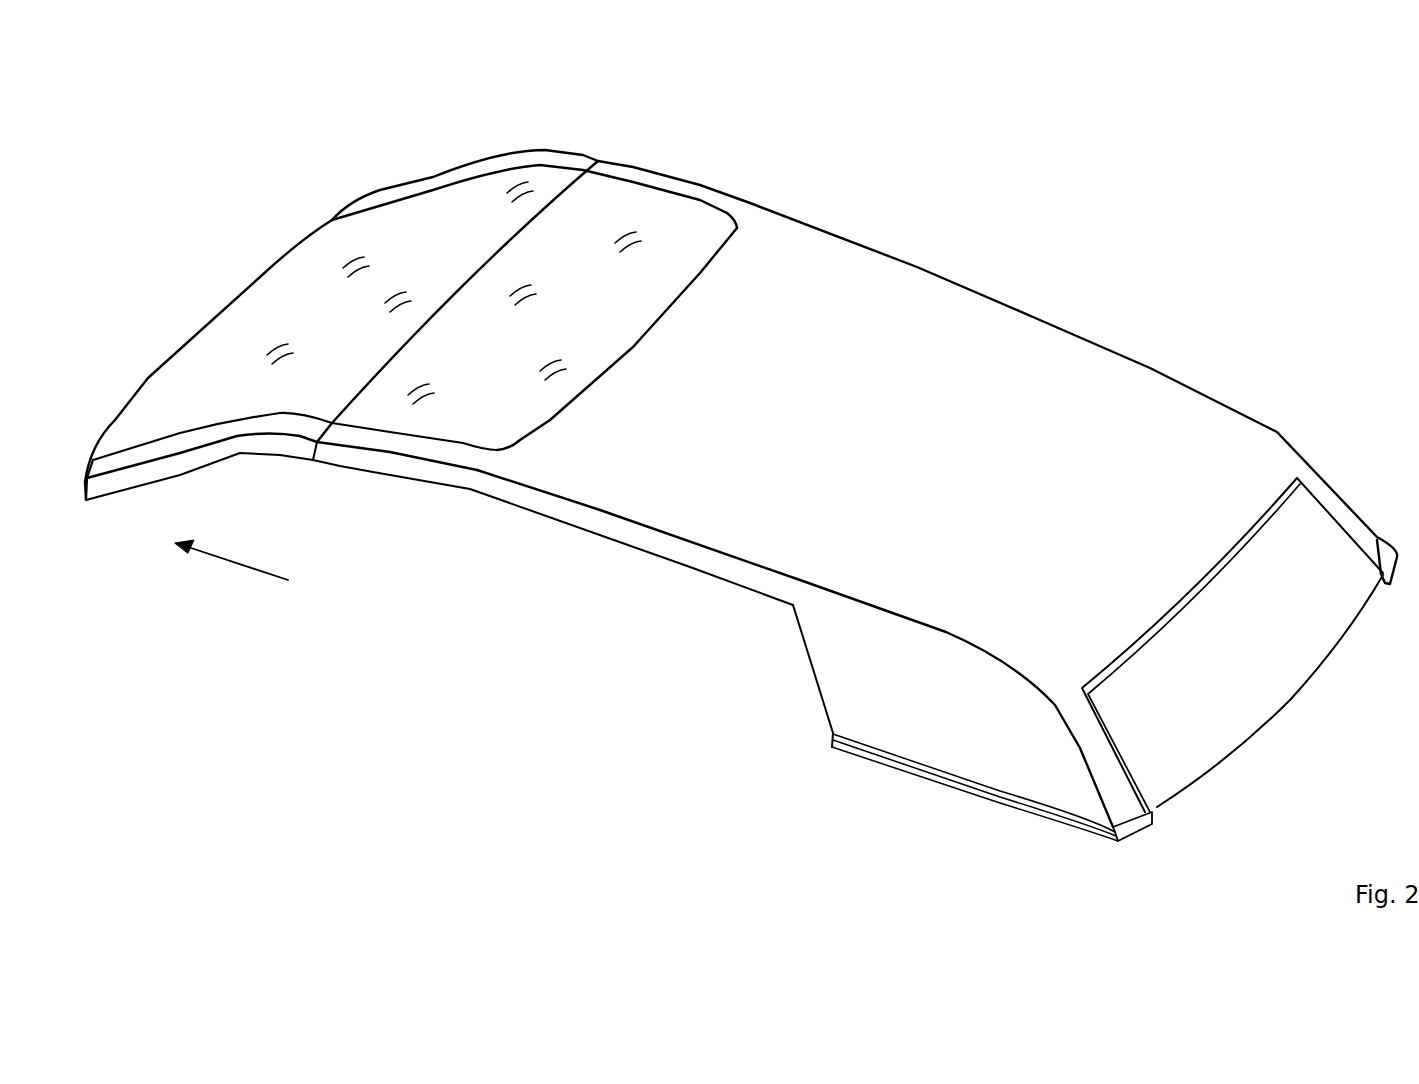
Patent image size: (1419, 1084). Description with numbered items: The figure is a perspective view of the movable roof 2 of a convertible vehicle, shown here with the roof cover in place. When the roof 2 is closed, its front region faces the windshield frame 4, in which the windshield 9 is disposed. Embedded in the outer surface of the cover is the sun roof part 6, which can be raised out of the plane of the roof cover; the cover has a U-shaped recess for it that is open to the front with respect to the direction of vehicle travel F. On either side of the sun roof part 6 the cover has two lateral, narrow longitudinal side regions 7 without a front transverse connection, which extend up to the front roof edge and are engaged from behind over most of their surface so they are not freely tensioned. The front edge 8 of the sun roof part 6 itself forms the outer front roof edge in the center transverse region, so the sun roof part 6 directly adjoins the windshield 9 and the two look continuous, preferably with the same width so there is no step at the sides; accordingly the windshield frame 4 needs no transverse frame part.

The movable roof 2 is at (923, 293).
The windshield frame 4 is at (240, 436).
The sun roof part 6 is at (616, 311).
The longitudinal side regions 7 is at (673, 192).
The front edge 8 is at (525, 227).
The windshield 9 is at (486, 199).
The direction of vehicle travel F is at (230, 562).